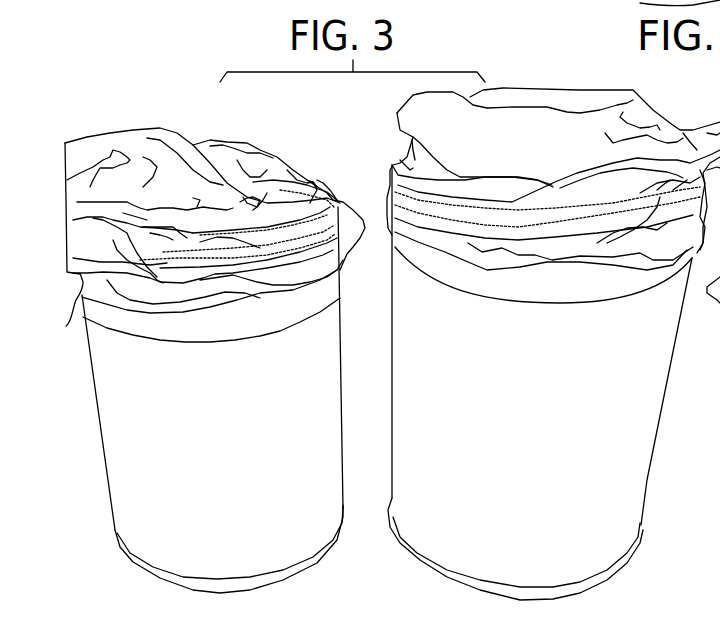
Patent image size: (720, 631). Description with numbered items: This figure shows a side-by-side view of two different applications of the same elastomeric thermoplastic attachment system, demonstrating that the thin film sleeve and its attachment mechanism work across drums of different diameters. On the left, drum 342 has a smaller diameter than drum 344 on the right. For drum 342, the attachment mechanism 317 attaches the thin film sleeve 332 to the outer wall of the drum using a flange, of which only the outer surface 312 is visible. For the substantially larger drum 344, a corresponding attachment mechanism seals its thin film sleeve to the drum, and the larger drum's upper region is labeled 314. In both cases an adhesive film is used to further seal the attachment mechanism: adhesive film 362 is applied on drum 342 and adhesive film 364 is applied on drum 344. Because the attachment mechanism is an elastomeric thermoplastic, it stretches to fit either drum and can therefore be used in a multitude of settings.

The outer surface of flange 312 is at (300, 310).
The second container 314 is at (633, 290).
The attachment mechanism 317 is at (66, 326).
The liner bag 332 is at (143, 152).
The drum 342 is at (140, 517).
The drum 344 is at (613, 520).
The adhesive film 362 is at (143, 332).
The adhesive film 364 is at (461, 289).